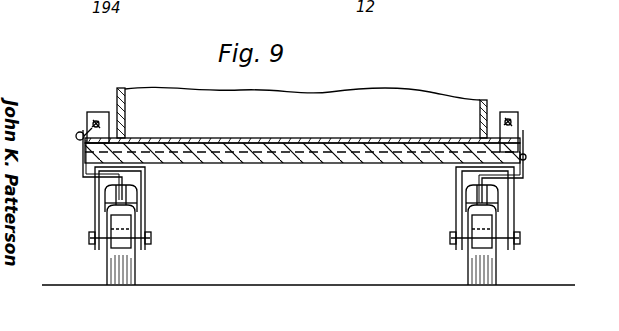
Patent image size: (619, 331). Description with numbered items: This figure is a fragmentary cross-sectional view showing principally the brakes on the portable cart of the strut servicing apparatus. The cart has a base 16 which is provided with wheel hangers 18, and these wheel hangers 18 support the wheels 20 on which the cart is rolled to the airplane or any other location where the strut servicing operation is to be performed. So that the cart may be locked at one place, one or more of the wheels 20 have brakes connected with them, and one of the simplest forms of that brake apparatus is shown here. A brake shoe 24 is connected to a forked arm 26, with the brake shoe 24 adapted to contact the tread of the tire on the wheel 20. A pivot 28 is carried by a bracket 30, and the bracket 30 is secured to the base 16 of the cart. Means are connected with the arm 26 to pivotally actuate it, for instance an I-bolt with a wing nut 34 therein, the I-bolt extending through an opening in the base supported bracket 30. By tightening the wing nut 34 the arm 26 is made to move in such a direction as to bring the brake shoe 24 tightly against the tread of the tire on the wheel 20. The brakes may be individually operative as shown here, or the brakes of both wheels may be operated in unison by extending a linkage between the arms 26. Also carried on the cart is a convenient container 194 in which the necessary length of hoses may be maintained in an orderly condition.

The base 16 is at (333, 163).
The wheel hangers 18 is at (147, 204).
The wheels 20 is at (128, 277).
The brake shoe 24 is at (123, 258).
The forked arm 26 is at (83, 179).
The pivot 28 is at (528, 158).
The bracket 30 is at (99, 137).
The wing nut 34 is at (92, 116).
The container 194 is at (428, 104).